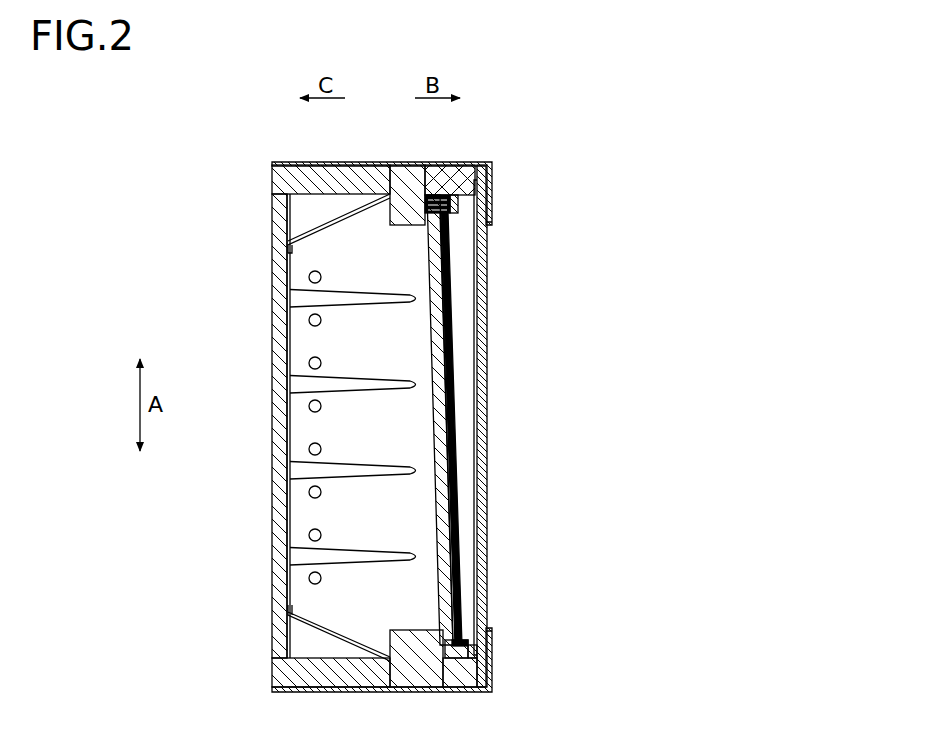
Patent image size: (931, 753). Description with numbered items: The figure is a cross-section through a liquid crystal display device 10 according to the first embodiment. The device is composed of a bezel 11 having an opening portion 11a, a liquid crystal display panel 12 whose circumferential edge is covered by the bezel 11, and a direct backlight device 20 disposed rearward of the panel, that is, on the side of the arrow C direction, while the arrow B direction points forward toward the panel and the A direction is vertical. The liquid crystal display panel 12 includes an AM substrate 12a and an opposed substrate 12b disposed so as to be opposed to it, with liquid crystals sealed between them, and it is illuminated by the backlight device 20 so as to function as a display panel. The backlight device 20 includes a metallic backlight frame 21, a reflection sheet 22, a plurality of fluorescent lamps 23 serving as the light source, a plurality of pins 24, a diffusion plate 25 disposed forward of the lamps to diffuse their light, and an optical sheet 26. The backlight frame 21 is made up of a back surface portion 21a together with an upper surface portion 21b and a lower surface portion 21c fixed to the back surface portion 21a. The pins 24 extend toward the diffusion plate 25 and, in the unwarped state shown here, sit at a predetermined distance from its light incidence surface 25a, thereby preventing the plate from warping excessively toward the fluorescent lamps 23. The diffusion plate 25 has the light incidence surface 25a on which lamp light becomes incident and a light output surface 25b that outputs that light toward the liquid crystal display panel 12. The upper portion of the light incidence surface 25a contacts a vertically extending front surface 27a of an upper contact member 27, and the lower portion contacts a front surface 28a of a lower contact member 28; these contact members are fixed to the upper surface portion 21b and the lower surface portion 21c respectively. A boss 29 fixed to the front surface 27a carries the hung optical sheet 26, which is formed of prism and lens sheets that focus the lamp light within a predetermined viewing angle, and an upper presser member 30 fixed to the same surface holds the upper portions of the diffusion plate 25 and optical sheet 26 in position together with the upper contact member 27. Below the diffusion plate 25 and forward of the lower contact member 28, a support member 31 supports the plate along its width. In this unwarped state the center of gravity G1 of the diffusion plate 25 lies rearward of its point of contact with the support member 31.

The liquid crystal display device 10 is at (539, 122).
The bezel 11 is at (493, 187).
The opening portion 11a is at (493, 229).
The liquid crystal display panel 12 is at (553, 272).
The AM substrate 12a is at (480, 284).
The opposed substrate 12b is at (486, 310).
The direct backlight device 20 is at (259, 192).
The backlight frame 21 is at (275, 432).
The back surface portion 21a is at (282, 241).
The upper surface portion 21b is at (313, 178).
The lower surface portion 21c is at (318, 675).
The reflection sheet 22 is at (325, 220).
The fluorescent lamps 23 is at (308, 278).
The pins 24 is at (302, 298).
The diffusion plate 25 is at (452, 404).
The light incidence surface 25a is at (446, 444).
The light output surface 25b is at (458, 444).
The optical sheet 26 is at (447, 364).
The upper contact member 27 is at (410, 178).
The front surface 27a is at (433, 172).
The lower contact member 28 is at (409, 684).
The front surface 28a is at (452, 652).
The boss 29 is at (437, 197).
The upper presser member 30 is at (447, 197).
The support member 31 is at (469, 652).
The center of gravity G1 is at (437, 430).